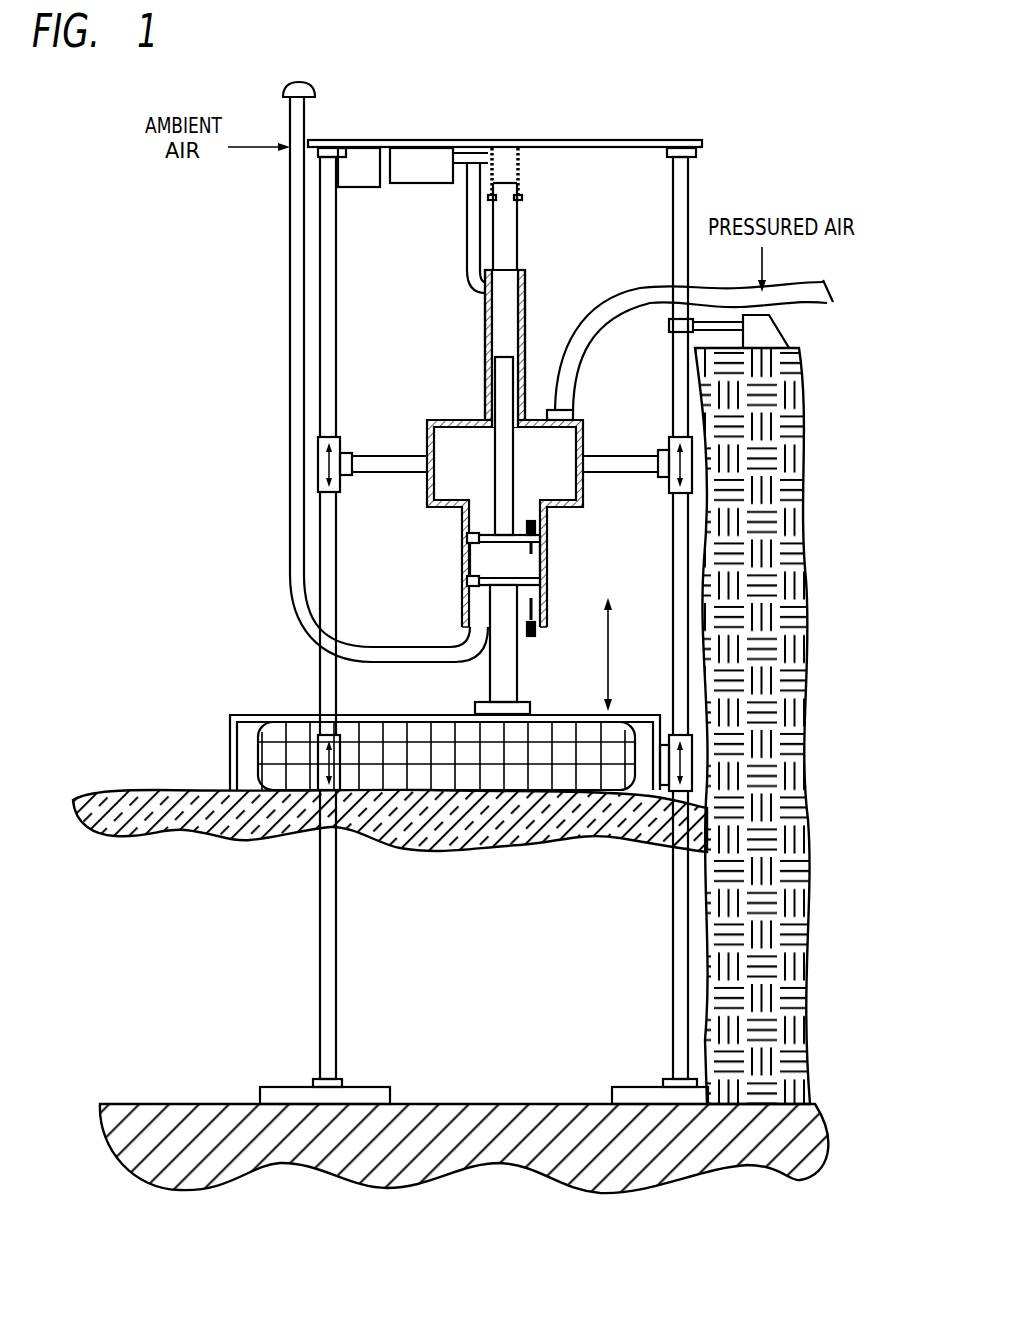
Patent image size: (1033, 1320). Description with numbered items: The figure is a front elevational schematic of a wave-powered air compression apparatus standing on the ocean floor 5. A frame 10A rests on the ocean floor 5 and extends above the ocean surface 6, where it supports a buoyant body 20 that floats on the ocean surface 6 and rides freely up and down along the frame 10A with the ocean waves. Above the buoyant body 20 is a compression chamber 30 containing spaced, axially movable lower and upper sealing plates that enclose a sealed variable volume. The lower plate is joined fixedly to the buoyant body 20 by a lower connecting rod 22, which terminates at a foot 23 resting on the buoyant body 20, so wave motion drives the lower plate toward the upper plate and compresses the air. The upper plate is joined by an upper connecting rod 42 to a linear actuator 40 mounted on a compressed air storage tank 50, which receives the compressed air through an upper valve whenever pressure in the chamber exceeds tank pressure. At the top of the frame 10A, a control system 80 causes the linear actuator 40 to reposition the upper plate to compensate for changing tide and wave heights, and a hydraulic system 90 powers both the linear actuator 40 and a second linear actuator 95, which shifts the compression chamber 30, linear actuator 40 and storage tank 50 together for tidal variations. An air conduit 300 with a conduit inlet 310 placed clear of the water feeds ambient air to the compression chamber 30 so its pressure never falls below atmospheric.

The ocean floor 5 is at (456, 1103).
The ocean surface 6 is at (128, 793).
The frame 10A is at (318, 692).
The buoyant body 20 is at (229, 733).
The lower connecting rod 22 is at (488, 693).
The foot plate 23 is at (532, 710).
The compression chamber 30 is at (548, 537).
The linear actuator 40 is at (527, 305).
The upper connecting rod 42 is at (502, 463).
The compressed air storage tank 50 is at (584, 485).
The control system 80 is at (366, 165).
The hydraulic system 90 is at (424, 165).
The linear actuator 95 is at (495, 168).
The air conduit 300 is at (293, 258).
The conduit inlet 310 is at (299, 93).